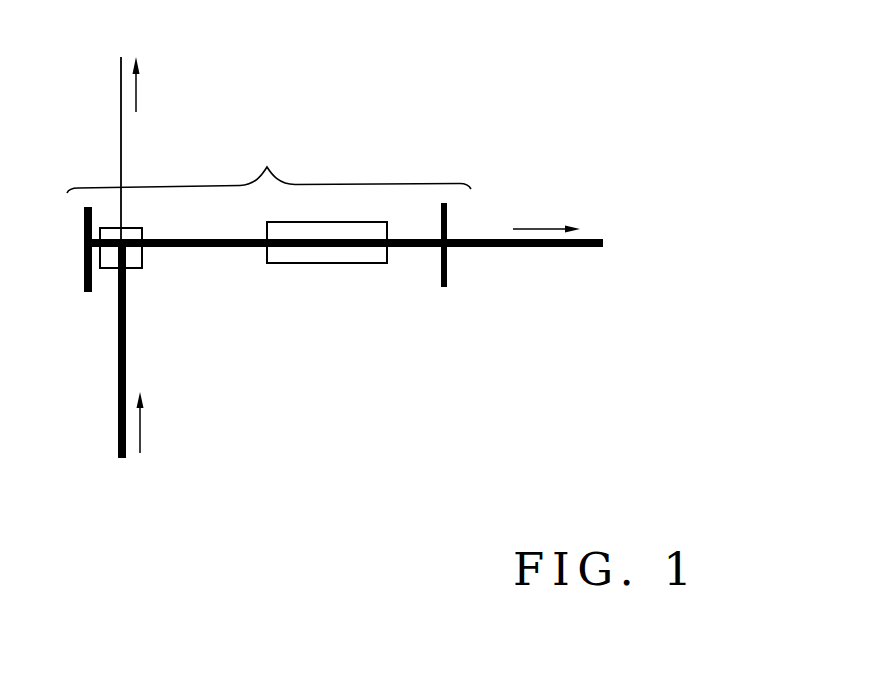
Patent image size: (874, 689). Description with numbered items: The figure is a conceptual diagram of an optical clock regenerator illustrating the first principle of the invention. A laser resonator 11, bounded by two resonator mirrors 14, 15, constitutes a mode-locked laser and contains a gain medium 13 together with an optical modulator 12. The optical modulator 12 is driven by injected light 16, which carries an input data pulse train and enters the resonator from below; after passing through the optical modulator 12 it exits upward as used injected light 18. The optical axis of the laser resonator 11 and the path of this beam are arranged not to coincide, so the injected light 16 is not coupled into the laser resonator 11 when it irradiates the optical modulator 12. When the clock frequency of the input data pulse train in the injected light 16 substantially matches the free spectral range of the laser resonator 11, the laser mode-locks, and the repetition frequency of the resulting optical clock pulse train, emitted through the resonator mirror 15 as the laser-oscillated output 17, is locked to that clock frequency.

The laser resonator 11 is at (269, 158).
The optical modulator 12 is at (132, 267).
The gain medium 13 is at (318, 257).
The resonator mirror 14 is at (88, 294).
The resonator mirror 15 is at (448, 267).
The injected light 16 is at (231, 350).
The laser-oscillated output 17 is at (477, 216).
The used injected light 18 is at (257, 150).